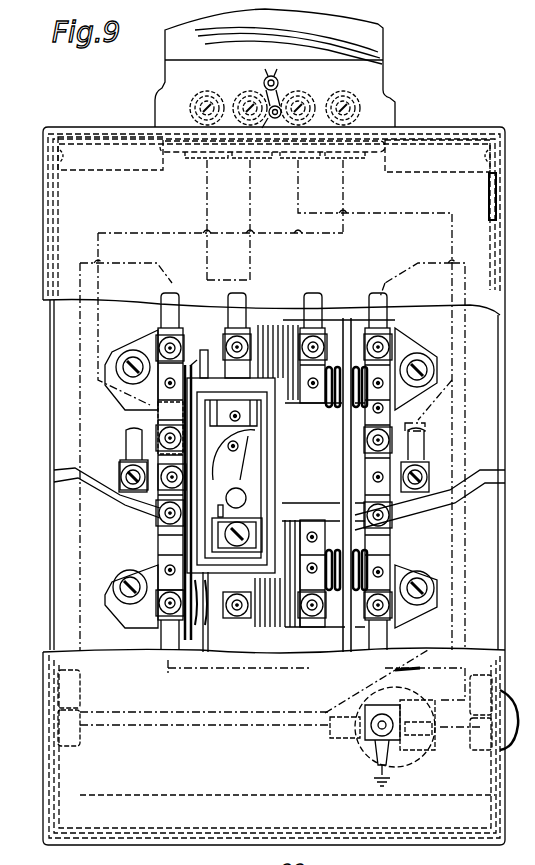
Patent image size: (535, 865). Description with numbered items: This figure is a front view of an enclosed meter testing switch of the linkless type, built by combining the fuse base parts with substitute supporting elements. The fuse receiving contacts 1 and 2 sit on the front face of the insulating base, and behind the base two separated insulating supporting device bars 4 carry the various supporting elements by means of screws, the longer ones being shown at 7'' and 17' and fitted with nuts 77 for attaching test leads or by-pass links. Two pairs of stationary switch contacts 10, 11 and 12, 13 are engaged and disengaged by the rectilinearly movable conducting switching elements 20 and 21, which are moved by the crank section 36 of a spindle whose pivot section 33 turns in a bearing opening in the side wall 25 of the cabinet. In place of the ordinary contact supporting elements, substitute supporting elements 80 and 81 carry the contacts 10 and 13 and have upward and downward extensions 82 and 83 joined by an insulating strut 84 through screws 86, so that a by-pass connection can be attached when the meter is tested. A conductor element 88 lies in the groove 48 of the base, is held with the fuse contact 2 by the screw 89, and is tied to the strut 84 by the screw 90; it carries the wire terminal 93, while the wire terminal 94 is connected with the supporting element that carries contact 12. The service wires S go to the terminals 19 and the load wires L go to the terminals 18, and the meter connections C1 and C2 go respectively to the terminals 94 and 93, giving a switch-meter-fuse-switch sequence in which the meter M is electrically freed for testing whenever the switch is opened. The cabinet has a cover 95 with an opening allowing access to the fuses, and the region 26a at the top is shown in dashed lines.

The motor M is at (375, 82).
The housing cover 26a is at (427, 134).
The meter connection C2 is at (148, 233).
The meter connection C1 is at (200, 263).
The cover 95 is at (432, 258).
The wire connecting terminal 19 is at (160, 303).
The switch contact 12 is at (168, 690).
The switch contact 11 is at (225, 292).
The wire terminal 94 is at (247, 317).
The screw 17' is at (141, 473).
The conducting switching element 21 is at (223, 332).
The terminal 7'' is at (321, 470).
The switch contact 13 is at (200, 338).
The supporting device bar 4 is at (413, 355).
The downward extension 83 is at (172, 446).
The substitute supporting element 81 is at (158, 412).
The wire terminal 93 is at (130, 442).
The fuse receiving contact 2 is at (240, 447).
The screw 89 is at (251, 458).
The conductor element 88 is at (232, 478).
The fuse receiving contact 1 is at (264, 520).
The groove 48 is at (219, 514).
The crank section 36 is at (326, 502).
The screw 86 is at (160, 512).
The screw 90 is at (107, 499).
The upward extension 82 is at (162, 532).
The substitute supporting element 80 is at (160, 540).
The insulating strut 84 is at (150, 545).
The nut 77 is at (165, 572).
The wire connecting terminal 18 is at (162, 636).
The switch contact 10 is at (190, 637).
The conducting switching element 20 is at (277, 485).
The side wall 25 is at (505, 418).
The pivot section 33 is at (505, 485).
The service wire S is at (112, 720).
The load wire L is at (448, 675).